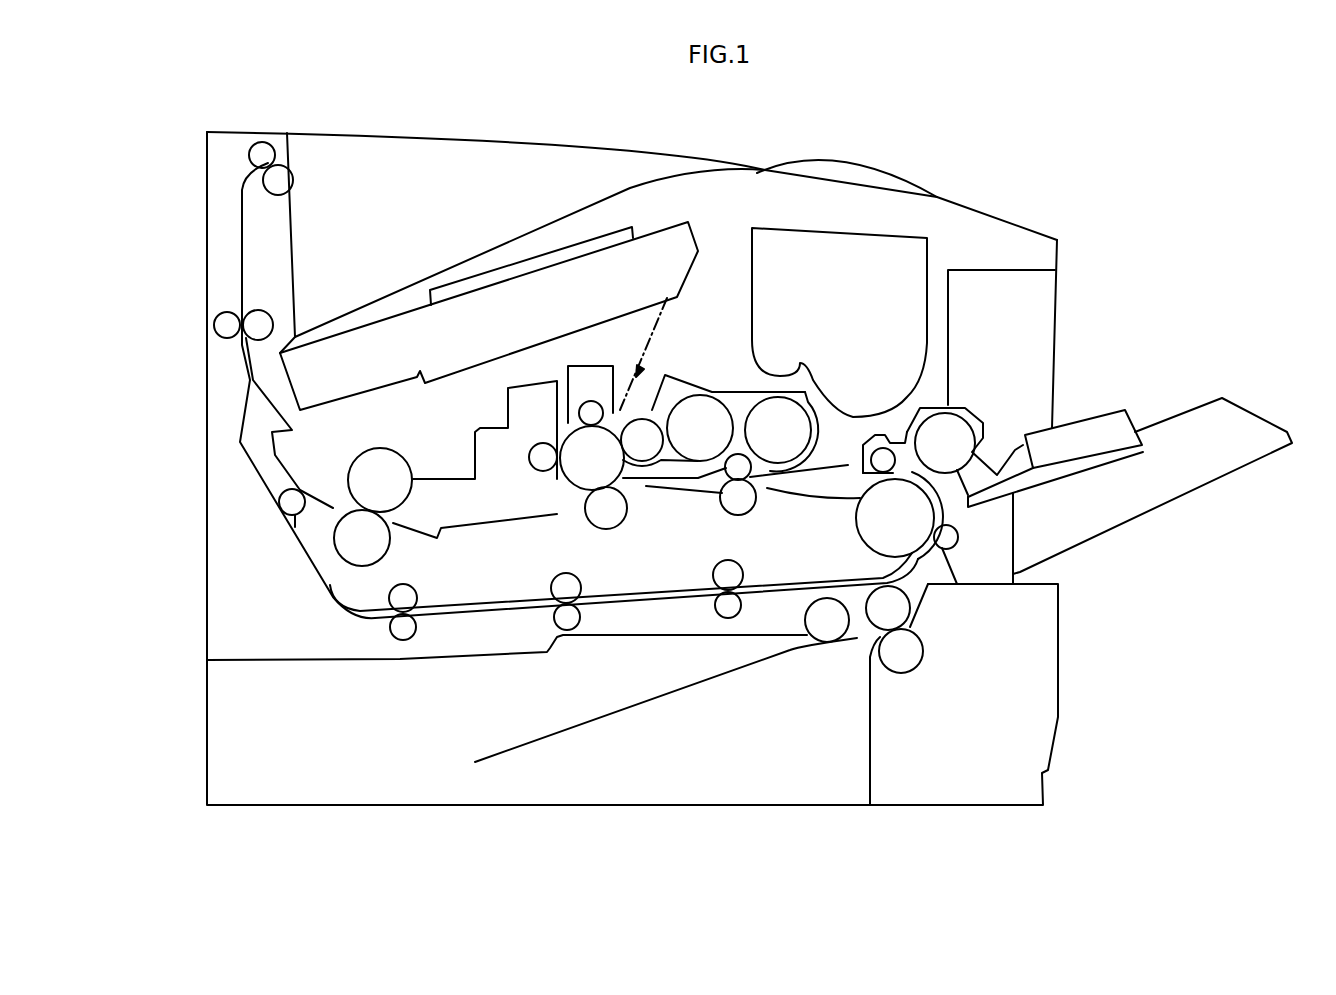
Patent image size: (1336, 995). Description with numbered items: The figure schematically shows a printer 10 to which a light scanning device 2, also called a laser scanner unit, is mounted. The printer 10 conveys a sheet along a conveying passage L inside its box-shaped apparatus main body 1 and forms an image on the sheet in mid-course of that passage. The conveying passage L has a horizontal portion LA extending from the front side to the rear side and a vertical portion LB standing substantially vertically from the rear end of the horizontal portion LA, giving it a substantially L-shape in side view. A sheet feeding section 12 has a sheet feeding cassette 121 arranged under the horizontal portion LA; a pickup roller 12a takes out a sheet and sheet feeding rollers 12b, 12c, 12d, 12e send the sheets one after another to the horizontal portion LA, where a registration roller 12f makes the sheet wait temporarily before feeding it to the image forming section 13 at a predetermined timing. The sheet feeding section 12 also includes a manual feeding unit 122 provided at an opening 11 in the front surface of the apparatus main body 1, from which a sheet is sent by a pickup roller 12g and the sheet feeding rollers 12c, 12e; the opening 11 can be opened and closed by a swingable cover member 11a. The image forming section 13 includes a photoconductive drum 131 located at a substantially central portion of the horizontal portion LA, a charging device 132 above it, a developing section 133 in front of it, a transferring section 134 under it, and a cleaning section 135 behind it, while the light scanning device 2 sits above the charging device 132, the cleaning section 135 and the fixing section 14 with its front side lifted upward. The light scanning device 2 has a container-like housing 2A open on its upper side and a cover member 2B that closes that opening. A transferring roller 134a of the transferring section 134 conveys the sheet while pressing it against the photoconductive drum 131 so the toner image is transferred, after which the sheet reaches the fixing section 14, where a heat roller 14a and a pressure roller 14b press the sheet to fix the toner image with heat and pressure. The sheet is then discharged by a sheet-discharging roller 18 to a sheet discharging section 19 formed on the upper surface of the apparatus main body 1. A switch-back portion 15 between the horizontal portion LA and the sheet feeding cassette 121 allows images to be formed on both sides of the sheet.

The apparatus main body 1 is at (1057, 331).
The light scanning device 2 is at (666, 217).
The housing 2A is at (373, 350).
The cover member 2B is at (393, 313).
The printer 10 is at (1066, 208).
The opening 11 is at (1012, 274).
The cover member 11a is at (1198, 478).
The sheet feeding section 12 is at (617, 750).
The pickup roller 12a is at (827, 632).
The sheet feeding roller 12b is at (895, 607).
The sheet feeding roller 12c is at (870, 530).
The sheet feeding roller 12d is at (957, 542).
The sheet feeding roller 12e is at (880, 458).
The registration roller 12f is at (748, 468).
The pickup roller 12g is at (960, 427).
The sheet feeding cassette 121 is at (342, 760).
The manual feeding unit 122 is at (1087, 467).
The image forming section 13 is at (726, 371).
The photoconductive drum 131 is at (578, 475).
The charging device 132 is at (595, 377).
The developing section 133 is at (673, 392).
The transferring section 134 is at (645, 522).
The transferring roller 134a is at (612, 517).
The cleaning section 135 is at (509, 462).
The fixing section 14 is at (392, 434).
The heat roller 14a is at (347, 492).
The pressure roller 14b is at (352, 546).
The switch-back portion 15 is at (512, 624).
The sheet-discharging roller 18 is at (287, 177).
The sheet discharging section 19 is at (527, 227).
The conveying passage L is at (253, 407).
The horizontal portion LA is at (697, 494).
The vertical portion LB is at (242, 225).